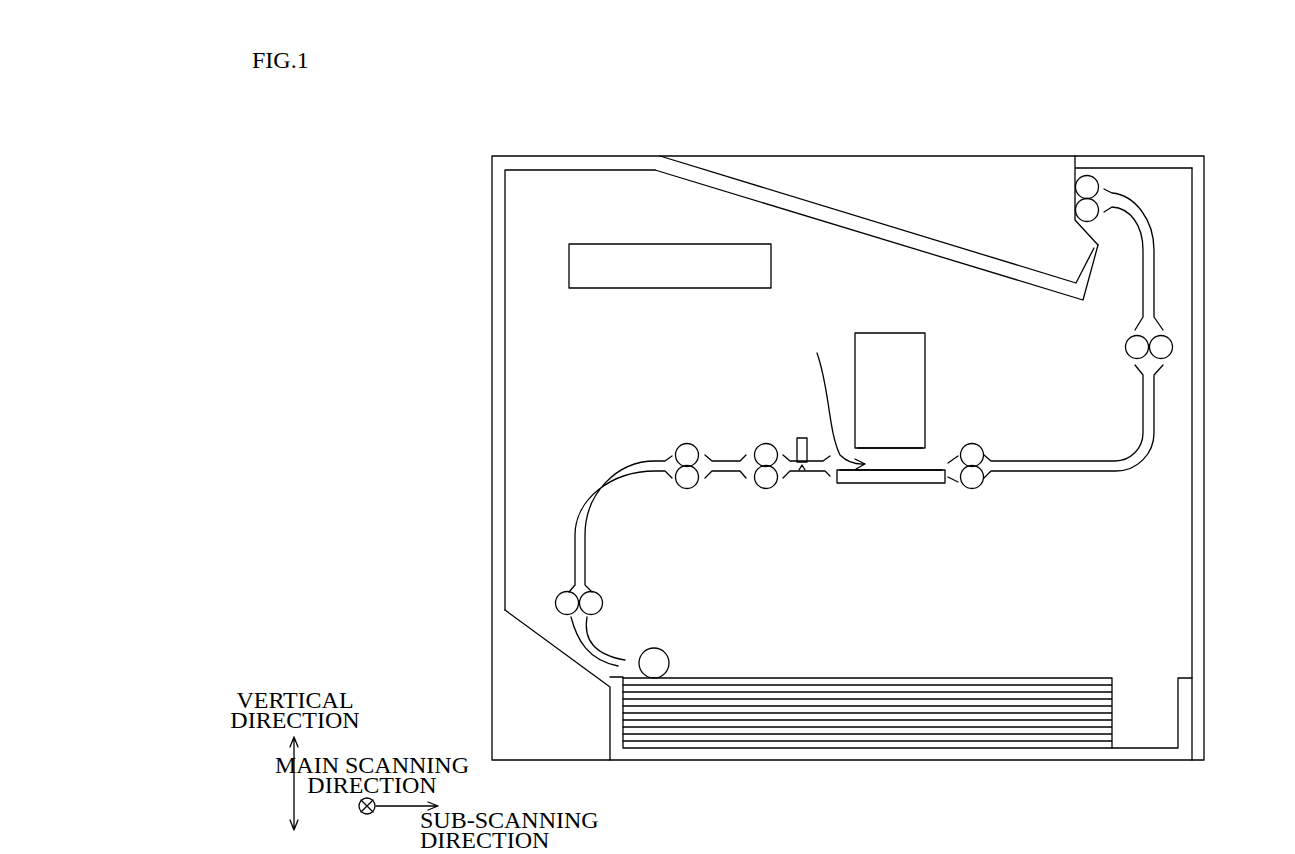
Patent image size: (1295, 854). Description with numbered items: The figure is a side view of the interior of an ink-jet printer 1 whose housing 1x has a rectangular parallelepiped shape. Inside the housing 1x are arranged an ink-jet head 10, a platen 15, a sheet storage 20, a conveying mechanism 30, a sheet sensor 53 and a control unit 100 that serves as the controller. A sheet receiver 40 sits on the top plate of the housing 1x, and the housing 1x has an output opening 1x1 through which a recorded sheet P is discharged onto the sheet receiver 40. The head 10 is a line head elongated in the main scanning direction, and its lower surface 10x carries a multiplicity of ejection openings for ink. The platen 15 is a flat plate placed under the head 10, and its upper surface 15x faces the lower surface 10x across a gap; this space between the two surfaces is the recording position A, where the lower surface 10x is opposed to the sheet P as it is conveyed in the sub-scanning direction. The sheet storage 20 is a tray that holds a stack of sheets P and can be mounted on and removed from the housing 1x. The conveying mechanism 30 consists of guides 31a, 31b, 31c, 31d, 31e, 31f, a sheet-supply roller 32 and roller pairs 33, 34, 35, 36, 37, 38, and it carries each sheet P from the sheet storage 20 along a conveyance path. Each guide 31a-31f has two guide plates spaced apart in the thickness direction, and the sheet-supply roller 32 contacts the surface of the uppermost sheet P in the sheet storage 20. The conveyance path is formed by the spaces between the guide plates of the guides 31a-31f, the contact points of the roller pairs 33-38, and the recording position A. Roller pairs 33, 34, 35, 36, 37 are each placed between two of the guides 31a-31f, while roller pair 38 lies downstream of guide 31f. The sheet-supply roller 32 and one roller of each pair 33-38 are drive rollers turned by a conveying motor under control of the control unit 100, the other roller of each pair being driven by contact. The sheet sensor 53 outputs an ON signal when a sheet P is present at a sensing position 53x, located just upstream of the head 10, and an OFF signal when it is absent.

The ink-jet printer 1 is at (464, 133).
The housing 1x is at (490, 458).
The output opening 1x1 is at (1075, 170).
The sheet receiver 40 is at (843, 175).
The control unit 100 is at (568, 268).
The ink-jet head 10 is at (927, 360).
The lower surface of head 10x is at (915, 452).
The platen 15 is at (918, 478).
The upper surface of platen 15x is at (888, 468).
The recording position A is at (837, 400).
The sheet sensor 53 is at (802, 437).
The sensing position 53x is at (802, 470).
The conveying mechanism 30 is at (1054, 530).
The guide 31a is at (593, 648).
The guide 31b is at (619, 471).
The guide 31c is at (728, 460).
The guide 31d is at (818, 475).
The guide 31e is at (1047, 458).
The guide 31f is at (1153, 287).
The sheet-supply roller 32 is at (664, 666).
The roller pair 33 is at (591, 603).
The roller pair 34 is at (690, 476).
The roller pair 35 is at (766, 478).
The roller pair 36 is at (963, 455).
The roller pair 37 is at (1137, 349).
The roller pair 38 is at (1087, 210).
The sheet storage 20 is at (610, 723).
The sheet P is at (992, 678).